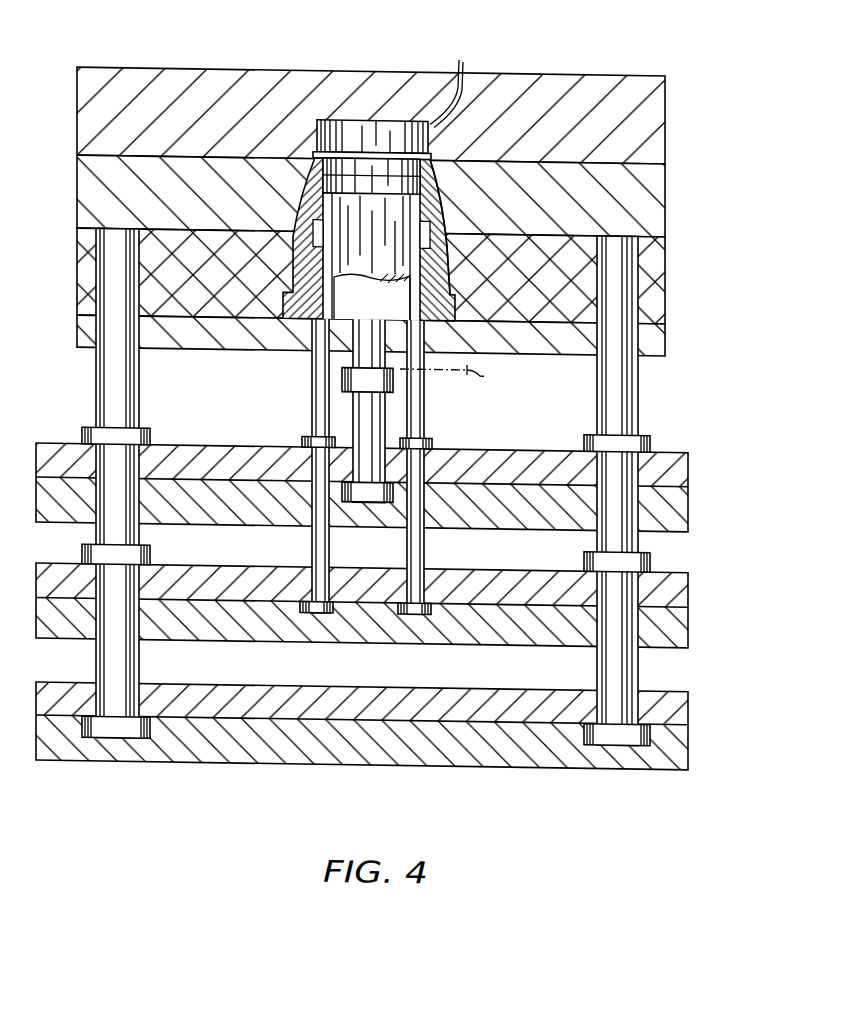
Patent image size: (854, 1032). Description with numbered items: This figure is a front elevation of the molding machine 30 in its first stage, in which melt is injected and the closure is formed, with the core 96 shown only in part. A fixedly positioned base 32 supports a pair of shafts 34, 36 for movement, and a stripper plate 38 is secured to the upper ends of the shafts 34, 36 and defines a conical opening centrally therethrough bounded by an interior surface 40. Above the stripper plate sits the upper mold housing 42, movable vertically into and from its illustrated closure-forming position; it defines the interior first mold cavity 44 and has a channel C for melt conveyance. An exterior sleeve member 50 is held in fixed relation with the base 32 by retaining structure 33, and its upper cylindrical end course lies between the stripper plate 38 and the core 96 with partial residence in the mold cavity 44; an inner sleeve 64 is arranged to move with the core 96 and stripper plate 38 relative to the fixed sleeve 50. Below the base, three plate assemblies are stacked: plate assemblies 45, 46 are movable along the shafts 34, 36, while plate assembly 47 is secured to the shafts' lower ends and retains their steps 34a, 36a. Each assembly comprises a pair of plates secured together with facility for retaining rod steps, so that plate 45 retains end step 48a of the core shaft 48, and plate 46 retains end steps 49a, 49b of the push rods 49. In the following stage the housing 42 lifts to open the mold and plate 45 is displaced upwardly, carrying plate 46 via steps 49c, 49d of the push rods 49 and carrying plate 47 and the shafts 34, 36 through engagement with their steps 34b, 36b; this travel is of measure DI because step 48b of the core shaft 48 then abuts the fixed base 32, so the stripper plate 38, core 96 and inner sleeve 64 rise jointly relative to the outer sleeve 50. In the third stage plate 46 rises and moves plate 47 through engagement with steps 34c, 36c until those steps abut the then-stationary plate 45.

The molding machine 30 is at (365, 416).
The upper mold housing 42 is at (262, 84).
The stripper plate 38 is at (660, 198).
The retaining structure 33 is at (80, 247).
The base 32 is at (658, 335).
The first mold cavity 44 is at (386, 130).
The exterior sleeve member 50 is at (306, 192).
The inner sleeve 64 is at (398, 220).
The interior surface 40 is at (440, 233).
The core 96 is at (380, 298).
The shaft 34 is at (139, 376).
The step of shaft 34a is at (112, 735).
The step of shaft 34b is at (149, 425).
The step of shaft 34c is at (150, 550).
The shaft 36 is at (606, 378).
The step of shaft 36a is at (612, 731).
The step of shaft 36b is at (646, 428).
The step of shaft 36c is at (643, 542).
The core shaft 48 is at (375, 404).
The end step of core shaft 48a is at (362, 488).
The step of core shaft 48b is at (342, 380).
The push rods 49 is at (408, 554).
The end step of push rod 49a is at (306, 609).
The end step of push rod 49b is at (415, 608).
The step of push rod 49c is at (305, 432).
The step of push rod 49d is at (432, 435).
The plate assembly 45 is at (535, 455).
The plate assembly 46 is at (522, 582).
The plate assembly 47 is at (516, 692).
The channel C is at (446, 83).
The measure D1 DI is at (453, 375).